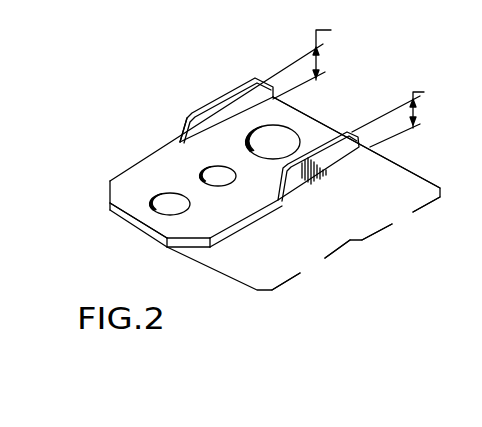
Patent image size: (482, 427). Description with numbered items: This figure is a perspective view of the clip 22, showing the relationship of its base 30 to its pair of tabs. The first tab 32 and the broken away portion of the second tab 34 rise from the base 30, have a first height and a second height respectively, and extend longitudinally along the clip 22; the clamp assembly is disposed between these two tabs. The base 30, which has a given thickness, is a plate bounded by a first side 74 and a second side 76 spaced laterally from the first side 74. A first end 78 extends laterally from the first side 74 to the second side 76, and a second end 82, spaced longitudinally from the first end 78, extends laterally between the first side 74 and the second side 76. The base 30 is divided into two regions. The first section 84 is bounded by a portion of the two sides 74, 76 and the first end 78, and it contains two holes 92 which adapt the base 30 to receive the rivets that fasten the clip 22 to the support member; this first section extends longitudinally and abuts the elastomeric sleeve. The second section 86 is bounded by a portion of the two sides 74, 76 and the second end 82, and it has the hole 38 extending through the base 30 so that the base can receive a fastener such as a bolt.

The clip 22 is at (168, 140).
The base 30 is at (264, 113).
The first tab 32 is at (199, 119).
The second tab 34 is at (338, 157).
The hole 38 is at (284, 128).
The first side 74 is at (128, 170).
The second side 76 is at (247, 218).
The first end 78 is at (133, 222).
The second end 82 is at (317, 120).
The first section 84 is at (311, 265).
The second section 86 is at (401, 218).
The holes 92 is at (201, 167).